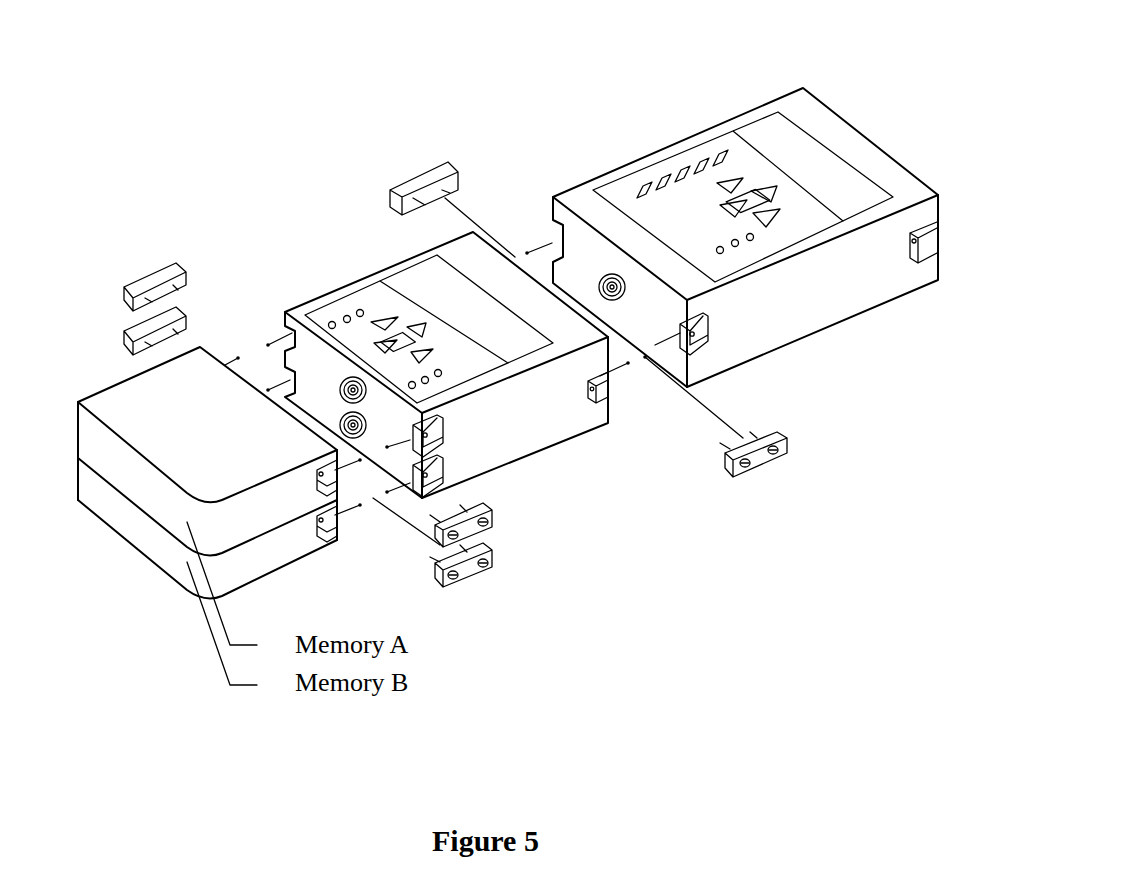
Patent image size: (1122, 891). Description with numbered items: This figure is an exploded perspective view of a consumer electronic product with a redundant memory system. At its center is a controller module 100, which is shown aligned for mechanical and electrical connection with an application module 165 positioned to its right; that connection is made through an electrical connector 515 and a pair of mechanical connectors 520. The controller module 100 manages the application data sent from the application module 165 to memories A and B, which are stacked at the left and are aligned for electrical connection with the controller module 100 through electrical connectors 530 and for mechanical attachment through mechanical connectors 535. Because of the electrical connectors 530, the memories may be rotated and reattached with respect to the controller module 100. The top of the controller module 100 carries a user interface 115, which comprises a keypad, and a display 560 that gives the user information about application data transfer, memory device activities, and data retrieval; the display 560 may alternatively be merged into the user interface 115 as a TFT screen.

The controller module 100 is at (518, 445).
The user interface 115 is at (355, 305).
The display 560 is at (435, 273).
The electrical connectors 530 is at (340, 423).
The application module 165 is at (767, 320).
The electrical connector 515 is at (618, 300).
The mechanical connectors 520 is at (438, 175).
The mechanical connectors 535 is at (122, 343).